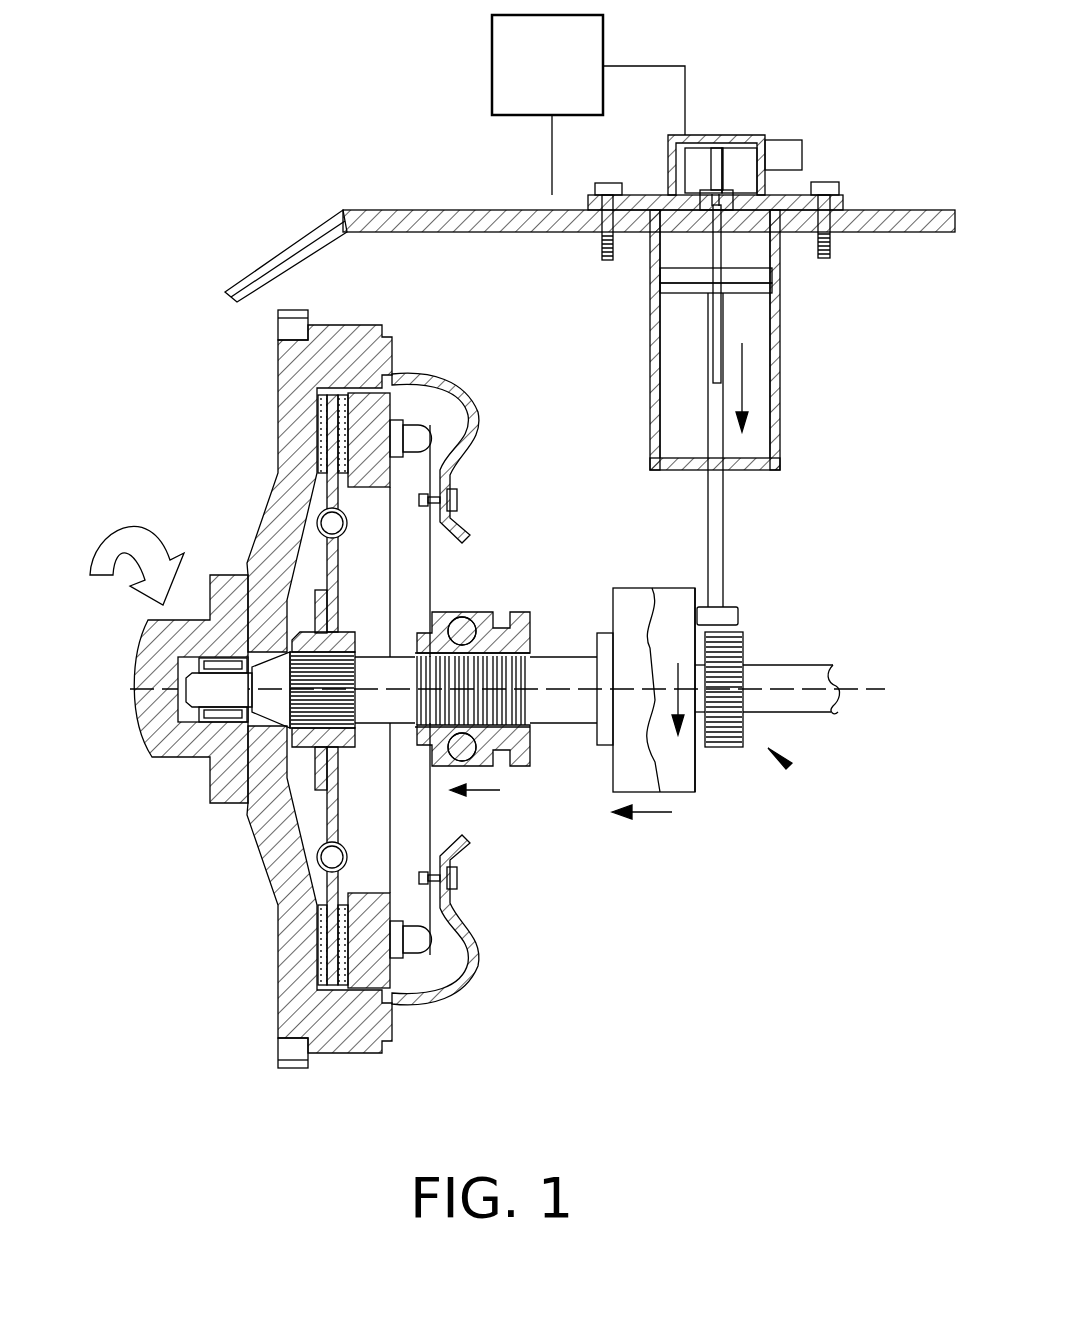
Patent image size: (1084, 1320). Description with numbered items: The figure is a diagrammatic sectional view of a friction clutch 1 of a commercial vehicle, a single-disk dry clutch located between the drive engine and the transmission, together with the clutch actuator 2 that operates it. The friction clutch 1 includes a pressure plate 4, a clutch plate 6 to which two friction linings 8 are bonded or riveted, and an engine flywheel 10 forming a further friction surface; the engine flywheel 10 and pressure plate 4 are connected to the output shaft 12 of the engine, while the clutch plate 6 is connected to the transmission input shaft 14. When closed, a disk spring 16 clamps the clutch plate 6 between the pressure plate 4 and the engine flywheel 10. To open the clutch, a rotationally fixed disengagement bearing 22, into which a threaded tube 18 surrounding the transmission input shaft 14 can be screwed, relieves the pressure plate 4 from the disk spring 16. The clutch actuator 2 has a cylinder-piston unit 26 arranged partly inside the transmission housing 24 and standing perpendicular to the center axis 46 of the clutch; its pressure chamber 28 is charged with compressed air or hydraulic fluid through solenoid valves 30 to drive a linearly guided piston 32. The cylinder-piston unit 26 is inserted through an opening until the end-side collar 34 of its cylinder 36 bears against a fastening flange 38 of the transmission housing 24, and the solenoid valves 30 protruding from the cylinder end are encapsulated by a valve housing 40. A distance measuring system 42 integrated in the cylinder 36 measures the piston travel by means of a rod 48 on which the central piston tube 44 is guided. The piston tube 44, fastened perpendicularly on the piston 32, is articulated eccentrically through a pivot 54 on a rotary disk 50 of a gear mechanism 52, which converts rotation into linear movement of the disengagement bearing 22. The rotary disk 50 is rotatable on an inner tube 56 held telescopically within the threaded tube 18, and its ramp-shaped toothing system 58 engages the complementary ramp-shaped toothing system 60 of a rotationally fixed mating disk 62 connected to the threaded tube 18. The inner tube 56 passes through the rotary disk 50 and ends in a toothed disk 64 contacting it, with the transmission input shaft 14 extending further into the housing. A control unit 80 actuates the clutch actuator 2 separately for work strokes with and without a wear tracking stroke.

The friction clutch 1 is at (183, 814).
The clutch actuator 2 is at (845, 392).
The pressure plate 4 is at (364, 900).
The clutch plate 6 is at (338, 795).
The friction linings 8 is at (340, 468).
The engine flywheel 10 is at (276, 437).
The output shaft 12 is at (140, 648).
The transmission input shaft 14 is at (823, 678).
The disk spring 16 is at (467, 984).
The threaded tube 18 is at (430, 660).
The disengagement bearing 22 is at (490, 590).
The transmission housing 24 is at (310, 227).
The cylinder-piston unit 26 is at (650, 400).
The pressure chamber 28 is at (748, 252).
The solenoid valves 30 is at (736, 162).
The piston 32 is at (673, 282).
The end-side collar 34 is at (847, 197).
The cylinder 36 is at (780, 446).
The fastening flange 38 is at (586, 201).
The valve housing 40 is at (757, 137).
The distance measuring system 42 is at (723, 305).
The piston tube 44 is at (725, 503).
The center axis 46 is at (127, 683).
The rod 48 is at (680, 325).
The rotary disk 50 is at (677, 783).
The gear mechanism 52 is at (822, 781).
The pivot 54 is at (737, 607).
The inner tube 56 is at (700, 712).
The ramp-shaped toothing system 58 is at (672, 600).
The complementary ramp-shaped toothing system 60 is at (640, 597).
The mating disk 62 is at (625, 758).
The toothed disk 64 is at (735, 648).
The control unit 80 is at (527, 87).